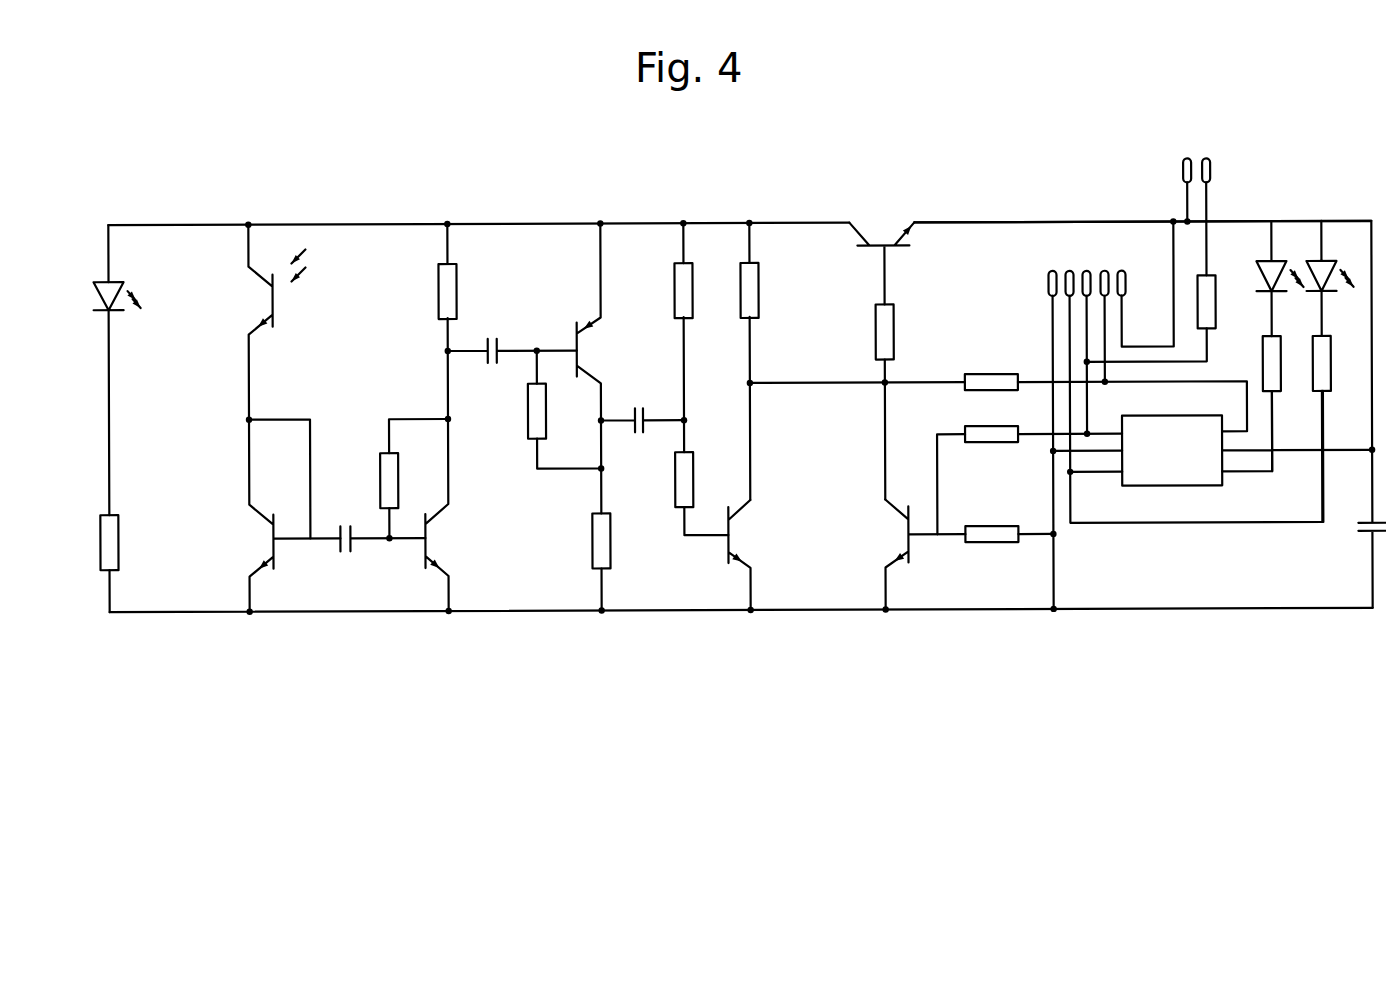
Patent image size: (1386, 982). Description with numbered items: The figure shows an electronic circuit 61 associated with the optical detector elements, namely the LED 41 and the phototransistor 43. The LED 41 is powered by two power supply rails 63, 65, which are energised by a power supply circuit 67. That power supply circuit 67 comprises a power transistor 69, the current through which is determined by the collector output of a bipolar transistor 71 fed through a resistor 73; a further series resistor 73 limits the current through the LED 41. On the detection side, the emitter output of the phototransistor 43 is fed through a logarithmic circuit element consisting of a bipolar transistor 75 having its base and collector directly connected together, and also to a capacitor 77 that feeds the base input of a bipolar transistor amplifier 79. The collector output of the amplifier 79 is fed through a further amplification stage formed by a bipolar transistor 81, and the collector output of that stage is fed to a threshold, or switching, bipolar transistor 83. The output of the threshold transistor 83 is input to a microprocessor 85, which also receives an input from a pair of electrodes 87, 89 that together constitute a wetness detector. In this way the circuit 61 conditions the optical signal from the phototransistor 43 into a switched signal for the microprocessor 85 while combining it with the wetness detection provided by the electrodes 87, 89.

The LED 41 is at (148, 297).
The phototransistor 43 is at (284, 314).
The electronic circuit 61 is at (645, 724).
The power supply rail 63 is at (334, 222).
The power supply rail 65 is at (333, 612).
The power supply circuit 67 is at (988, 185).
The power transistor 69 is at (873, 228).
The bipolar transistor 71 is at (884, 552).
The resistor 73 is at (120, 541).
The bipolar transistor 75 is at (262, 546).
The capacitor 77 is at (346, 522).
The bipolar transistor amplifier 79 is at (450, 528).
The bipolar transistor 81 is at (592, 343).
The threshold (switching) bipolar transistor 83 is at (746, 521).
The microprocessor 85 is at (1158, 464).
The electrode 87 is at (1212, 172).
The electrode 89 is at (1183, 172).